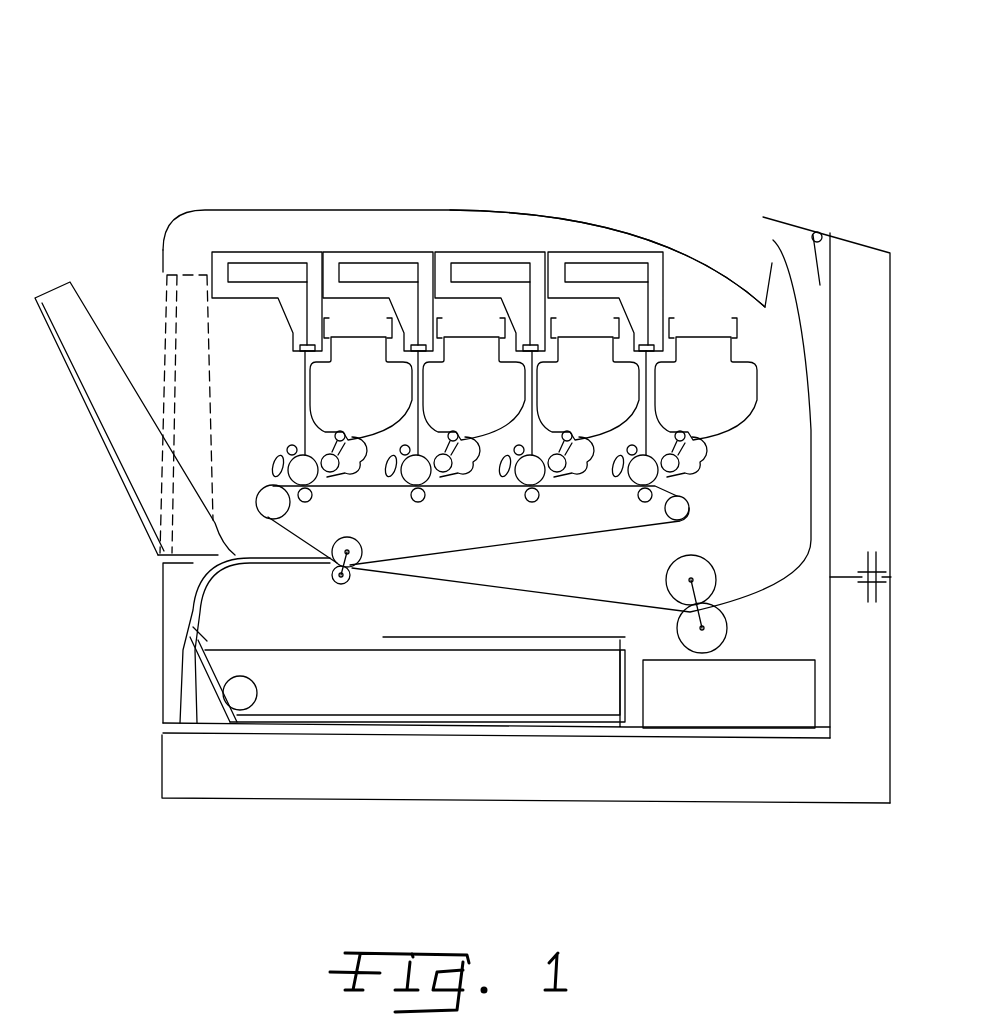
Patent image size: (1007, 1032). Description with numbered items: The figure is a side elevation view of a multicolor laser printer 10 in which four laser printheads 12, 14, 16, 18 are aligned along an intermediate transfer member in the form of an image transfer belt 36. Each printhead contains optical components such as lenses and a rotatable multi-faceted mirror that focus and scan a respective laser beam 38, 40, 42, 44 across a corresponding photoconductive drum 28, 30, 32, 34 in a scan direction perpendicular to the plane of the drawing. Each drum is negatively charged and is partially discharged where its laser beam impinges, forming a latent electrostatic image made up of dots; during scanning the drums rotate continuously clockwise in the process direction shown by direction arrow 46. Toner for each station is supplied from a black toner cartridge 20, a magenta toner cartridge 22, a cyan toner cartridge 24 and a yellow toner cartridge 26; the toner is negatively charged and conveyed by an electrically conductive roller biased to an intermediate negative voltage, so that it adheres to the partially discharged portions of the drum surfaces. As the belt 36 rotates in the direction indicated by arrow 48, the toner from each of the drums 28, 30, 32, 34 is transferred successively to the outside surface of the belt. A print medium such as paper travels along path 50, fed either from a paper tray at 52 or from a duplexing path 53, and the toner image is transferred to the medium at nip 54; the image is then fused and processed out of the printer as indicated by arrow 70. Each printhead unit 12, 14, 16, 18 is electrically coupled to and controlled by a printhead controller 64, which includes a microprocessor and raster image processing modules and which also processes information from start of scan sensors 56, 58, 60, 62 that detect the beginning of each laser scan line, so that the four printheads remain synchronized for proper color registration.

The laser printer 10 is at (718, 98).
The laser printhead 12 is at (265, 262).
The laser printhead 14 is at (376, 248).
The laser printhead 16 is at (490, 238).
The laser printhead 18 is at (605, 267).
The black toner cartridge 20 is at (379, 412).
The magenta toner cartridge 22 is at (474, 379).
The cyan toner cartridge 24 is at (588, 379).
The yellow toner cartridge 26 is at (706, 379).
The photoconductive drum 28 is at (318, 498).
The photoconductive drum 30 is at (438, 509).
The photoconductive drum 32 is at (554, 507).
The photoconductive drum 34 is at (696, 490).
The image transfer belt 36 is at (505, 560).
The laser beam 38 is at (303, 372).
The laser beam 40 is at (405, 293).
The laser beam 42 is at (531, 306).
The laser beam 44 is at (672, 309).
The direction arrow 46 is at (278, 440).
The arrow 48 is at (698, 510).
The path 50 is at (205, 572).
The paper tray 52 is at (258, 676).
The duplexing path 53 is at (190, 742).
The nip 54 is at (328, 575).
The start of scan sensor 56 is at (298, 342).
The start of scan sensor 58 is at (441, 260).
The start of scan sensor 60 is at (557, 263).
The start of scan sensor 62 is at (691, 294).
The printhead controller 64 is at (708, 708).
The arrow 70 is at (710, 208).